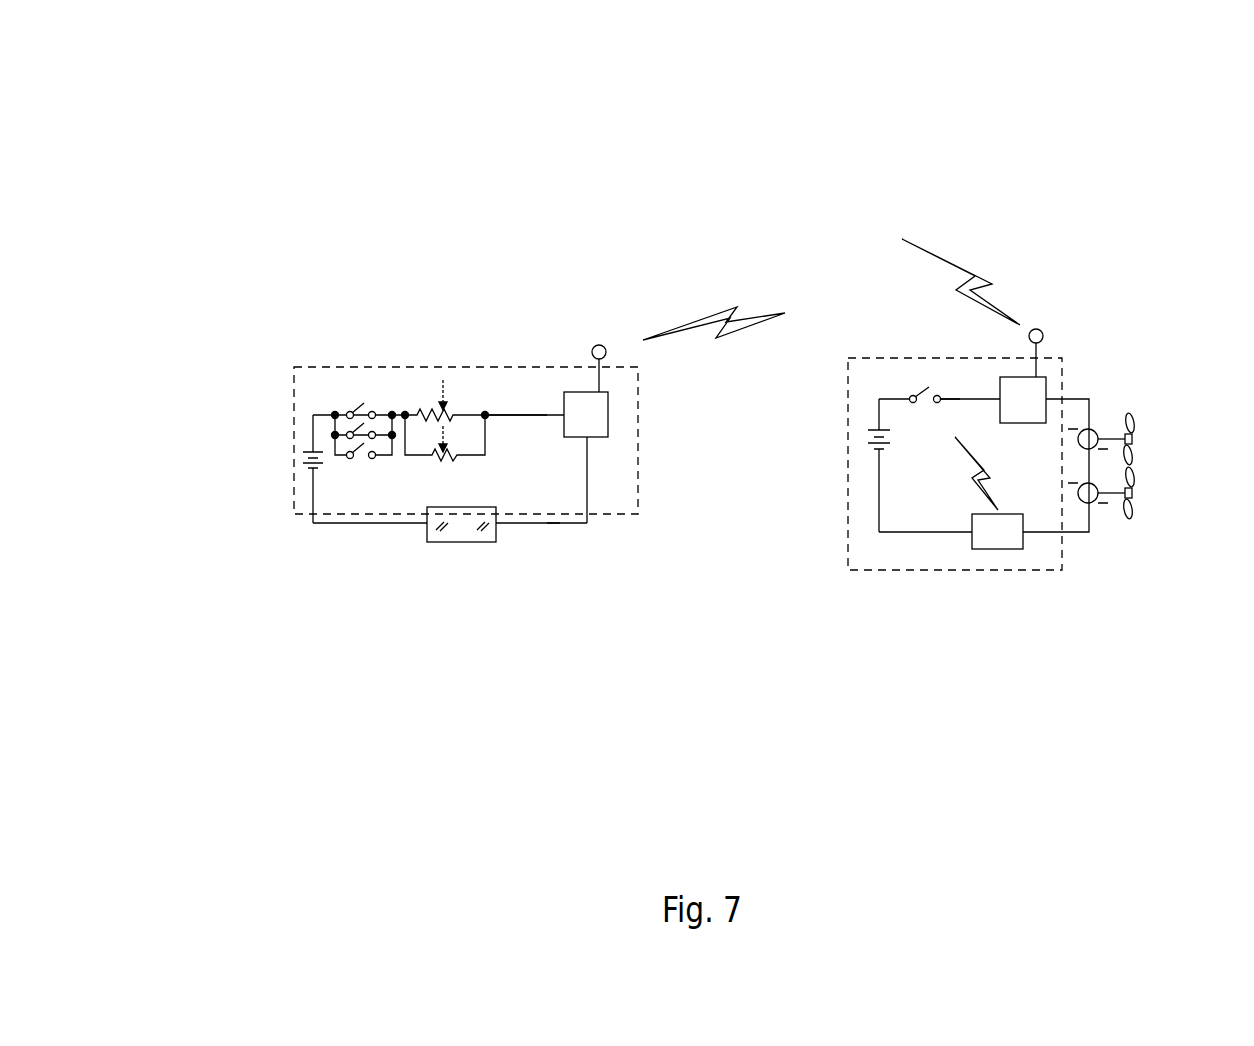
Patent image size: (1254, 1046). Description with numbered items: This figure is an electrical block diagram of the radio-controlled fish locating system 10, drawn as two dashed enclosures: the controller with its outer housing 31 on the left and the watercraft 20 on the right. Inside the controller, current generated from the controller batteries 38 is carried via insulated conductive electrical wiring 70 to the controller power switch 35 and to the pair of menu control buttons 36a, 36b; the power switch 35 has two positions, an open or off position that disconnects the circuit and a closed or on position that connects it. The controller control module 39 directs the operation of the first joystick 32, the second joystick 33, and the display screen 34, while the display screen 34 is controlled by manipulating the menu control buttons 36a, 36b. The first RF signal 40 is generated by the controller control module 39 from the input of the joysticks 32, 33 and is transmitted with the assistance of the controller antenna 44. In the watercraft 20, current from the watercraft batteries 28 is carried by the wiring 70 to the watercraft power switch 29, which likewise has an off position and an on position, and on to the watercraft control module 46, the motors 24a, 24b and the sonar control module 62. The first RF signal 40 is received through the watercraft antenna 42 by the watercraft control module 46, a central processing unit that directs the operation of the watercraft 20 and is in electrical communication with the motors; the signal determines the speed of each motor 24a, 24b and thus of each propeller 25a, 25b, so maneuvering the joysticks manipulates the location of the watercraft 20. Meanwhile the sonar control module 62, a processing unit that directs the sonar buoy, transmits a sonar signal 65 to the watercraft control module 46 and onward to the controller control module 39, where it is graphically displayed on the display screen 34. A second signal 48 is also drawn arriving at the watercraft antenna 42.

The radio-controlled fish locating system 10 is at (166, 152).
The watercraft 20 is at (848, 402).
The first motor 24a is at (1098, 434).
The second motor 24b is at (1095, 500).
The first propeller 25a is at (1135, 437).
The second propeller 25b is at (1135, 495).
The watercraft batteries 28 is at (869, 442).
The watercraft power switch 29 is at (912, 395).
The outer housing 31 is at (295, 388).
The first joystick 32 is at (423, 412).
The second joystick 33 is at (440, 460).
The display screen 34 is at (452, 535).
The controller power switch 35 is at (350, 410).
The menu control button 36a is at (347, 434).
The menu control button 36b is at (352, 459).
The controller batteries 38 is at (313, 468).
The controller control module 39 is at (609, 405).
The first RF signal 40 is at (718, 318).
The watercraft antenna 42 is at (1043, 332).
The controller antenna 44 is at (606, 346).
The watercraft control module 46 is at (1032, 396).
The received signal 48 is at (1000, 312).
The sonar control module 62 is at (1002, 535).
The sonar signal 65 is at (975, 482).
The insulated conductive electrical wiring 70 is at (547, 415).